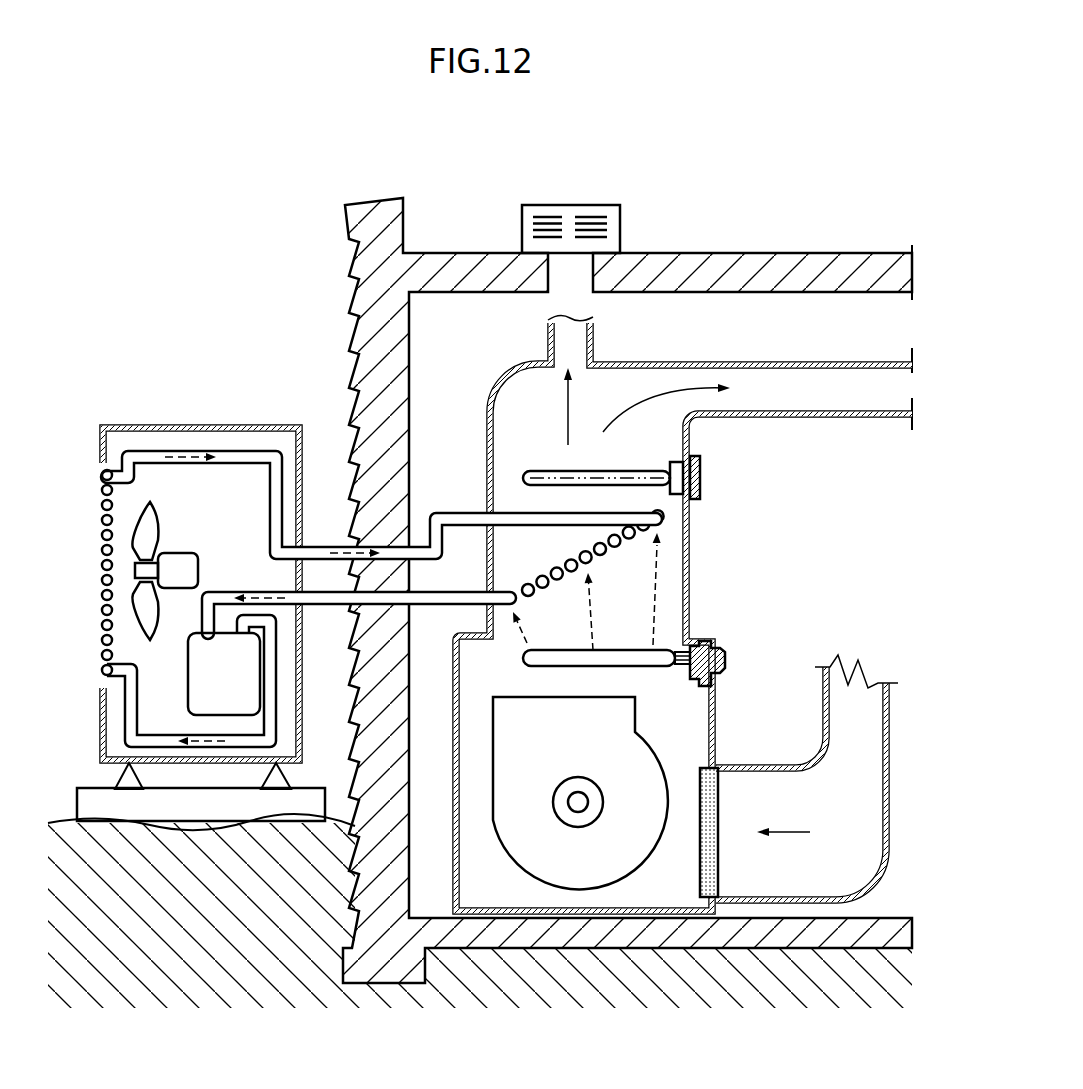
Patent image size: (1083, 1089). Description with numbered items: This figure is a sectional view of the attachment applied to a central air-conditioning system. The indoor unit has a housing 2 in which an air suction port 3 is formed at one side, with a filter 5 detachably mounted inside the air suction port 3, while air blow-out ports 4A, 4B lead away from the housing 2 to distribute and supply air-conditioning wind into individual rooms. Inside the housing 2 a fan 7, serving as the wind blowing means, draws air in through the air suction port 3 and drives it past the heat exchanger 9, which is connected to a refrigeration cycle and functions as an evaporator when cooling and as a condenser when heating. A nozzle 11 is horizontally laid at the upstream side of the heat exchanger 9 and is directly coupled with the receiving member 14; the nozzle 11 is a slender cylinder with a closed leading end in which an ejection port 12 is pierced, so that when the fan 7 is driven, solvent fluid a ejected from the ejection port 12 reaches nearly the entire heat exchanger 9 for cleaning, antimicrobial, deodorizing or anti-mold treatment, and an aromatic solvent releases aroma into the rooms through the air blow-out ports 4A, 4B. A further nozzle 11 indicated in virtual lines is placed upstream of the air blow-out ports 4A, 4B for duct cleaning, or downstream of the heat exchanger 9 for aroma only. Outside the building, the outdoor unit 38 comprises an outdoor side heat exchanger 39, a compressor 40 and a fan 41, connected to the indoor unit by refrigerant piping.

The housing 2 is at (452, 790).
The air suction port 3 is at (870, 778).
The air blow-out port 4A is at (766, 405).
The air blow-out port 4B is at (595, 338).
The filter 5 is at (718, 800).
The fan 7 is at (630, 852).
The heat exchanger 9 is at (615, 540).
The nozzle 11 is at (533, 470).
The ejection port 12 is at (625, 650).
The receiving member 14 is at (730, 638).
The outdoor unit 38 is at (172, 425).
The outdoor side heat exchanger 39 is at (102, 553).
The compressor 40 is at (200, 680).
The fan 41 is at (157, 527).
The solvent fluid a is at (590, 612).